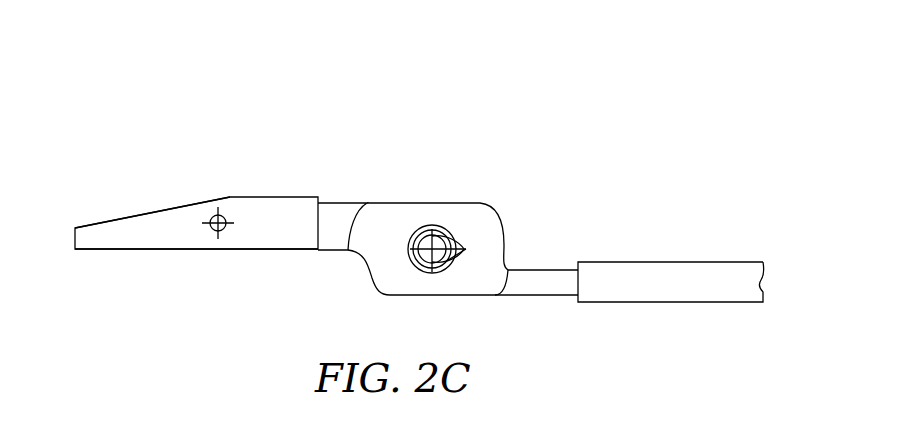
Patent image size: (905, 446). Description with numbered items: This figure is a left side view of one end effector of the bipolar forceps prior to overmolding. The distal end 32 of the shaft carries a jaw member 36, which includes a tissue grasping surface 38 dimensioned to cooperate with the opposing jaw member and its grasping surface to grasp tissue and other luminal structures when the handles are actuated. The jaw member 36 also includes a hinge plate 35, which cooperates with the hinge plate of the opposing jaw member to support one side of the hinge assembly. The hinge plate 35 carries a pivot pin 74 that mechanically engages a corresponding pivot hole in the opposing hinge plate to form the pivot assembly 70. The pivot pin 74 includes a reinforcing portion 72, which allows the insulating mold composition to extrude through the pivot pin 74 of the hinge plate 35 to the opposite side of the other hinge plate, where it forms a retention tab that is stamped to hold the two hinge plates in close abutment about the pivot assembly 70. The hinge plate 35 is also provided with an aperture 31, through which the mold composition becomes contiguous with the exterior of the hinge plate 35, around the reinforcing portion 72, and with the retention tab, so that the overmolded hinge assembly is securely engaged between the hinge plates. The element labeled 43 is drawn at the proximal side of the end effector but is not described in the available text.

The distal end 32 is at (276, 192).
The jaw member 36 is at (152, 210).
The tissue grasping surface 38 is at (105, 250).
The hinge plate 35 is at (450, 215).
The pivot assembly 70 is at (400, 272).
The pivot pin 74 is at (418, 237).
The aperture 31 is at (458, 240).
The reinforcing portion 72 is at (465, 253).
The handle 43 is at (685, 277).